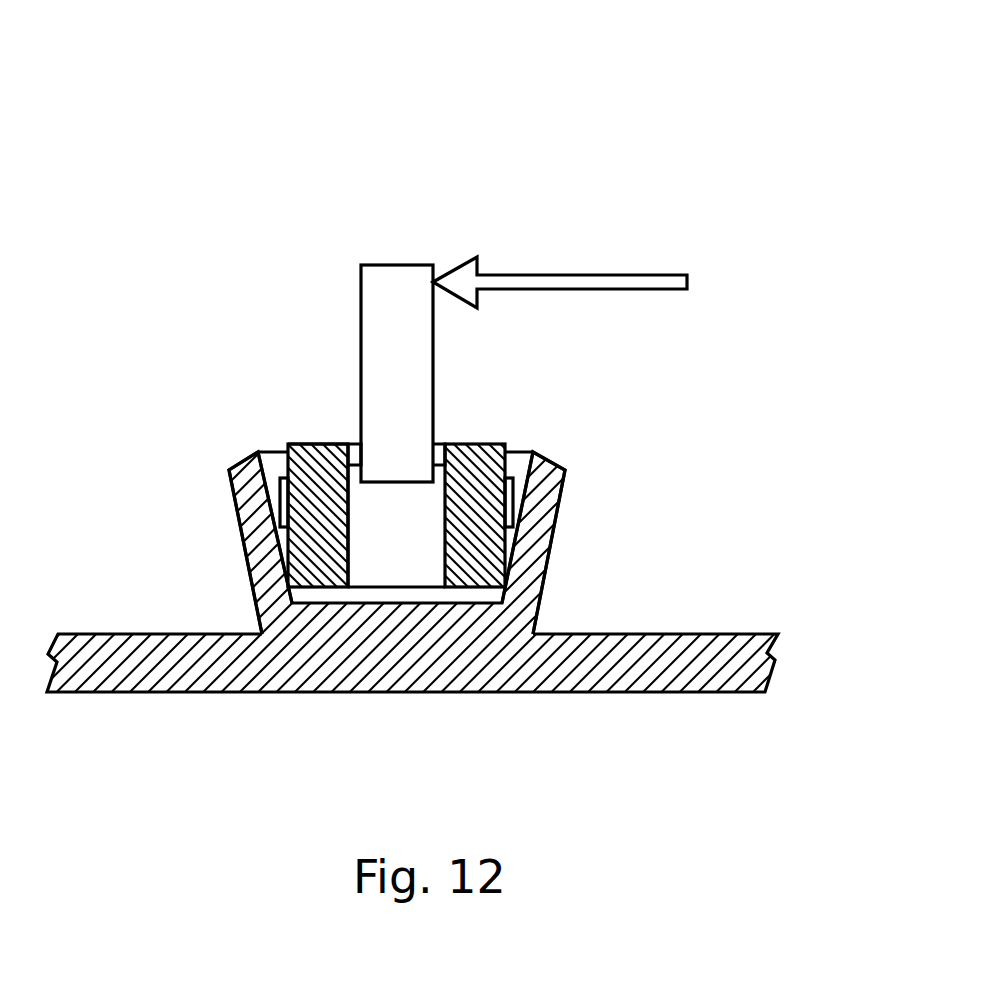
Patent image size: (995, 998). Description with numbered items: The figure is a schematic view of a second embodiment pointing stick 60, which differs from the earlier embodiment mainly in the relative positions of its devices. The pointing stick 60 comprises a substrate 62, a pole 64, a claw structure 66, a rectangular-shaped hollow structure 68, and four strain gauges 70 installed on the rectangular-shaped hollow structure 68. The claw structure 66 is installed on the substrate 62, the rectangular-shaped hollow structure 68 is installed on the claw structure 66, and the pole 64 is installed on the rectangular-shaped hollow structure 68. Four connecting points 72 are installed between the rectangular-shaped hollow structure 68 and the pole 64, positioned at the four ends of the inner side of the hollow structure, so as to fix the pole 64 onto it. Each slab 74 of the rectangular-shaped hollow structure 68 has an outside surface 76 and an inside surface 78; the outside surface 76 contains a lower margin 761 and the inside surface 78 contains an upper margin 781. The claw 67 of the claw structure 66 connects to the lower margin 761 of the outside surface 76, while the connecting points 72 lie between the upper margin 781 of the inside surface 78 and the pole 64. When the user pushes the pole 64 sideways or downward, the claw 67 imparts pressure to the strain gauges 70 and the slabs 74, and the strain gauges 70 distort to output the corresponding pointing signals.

The pointing stick 60 is at (548, 80).
The substrate 62 is at (715, 638).
The pole 64 is at (360, 300).
The claw structure 66 is at (560, 600).
The claw 67 is at (536, 535).
The rectangular-shaped hollow structure 68 is at (480, 433).
The strain gauges 70 is at (243, 528).
The connecting points 72 is at (352, 457).
The slab 74 is at (315, 463).
The outside surface 76 is at (260, 452).
The inside surface 78 is at (352, 547).
The lower margin 761 is at (292, 583).
The upper margin 781 is at (352, 448).